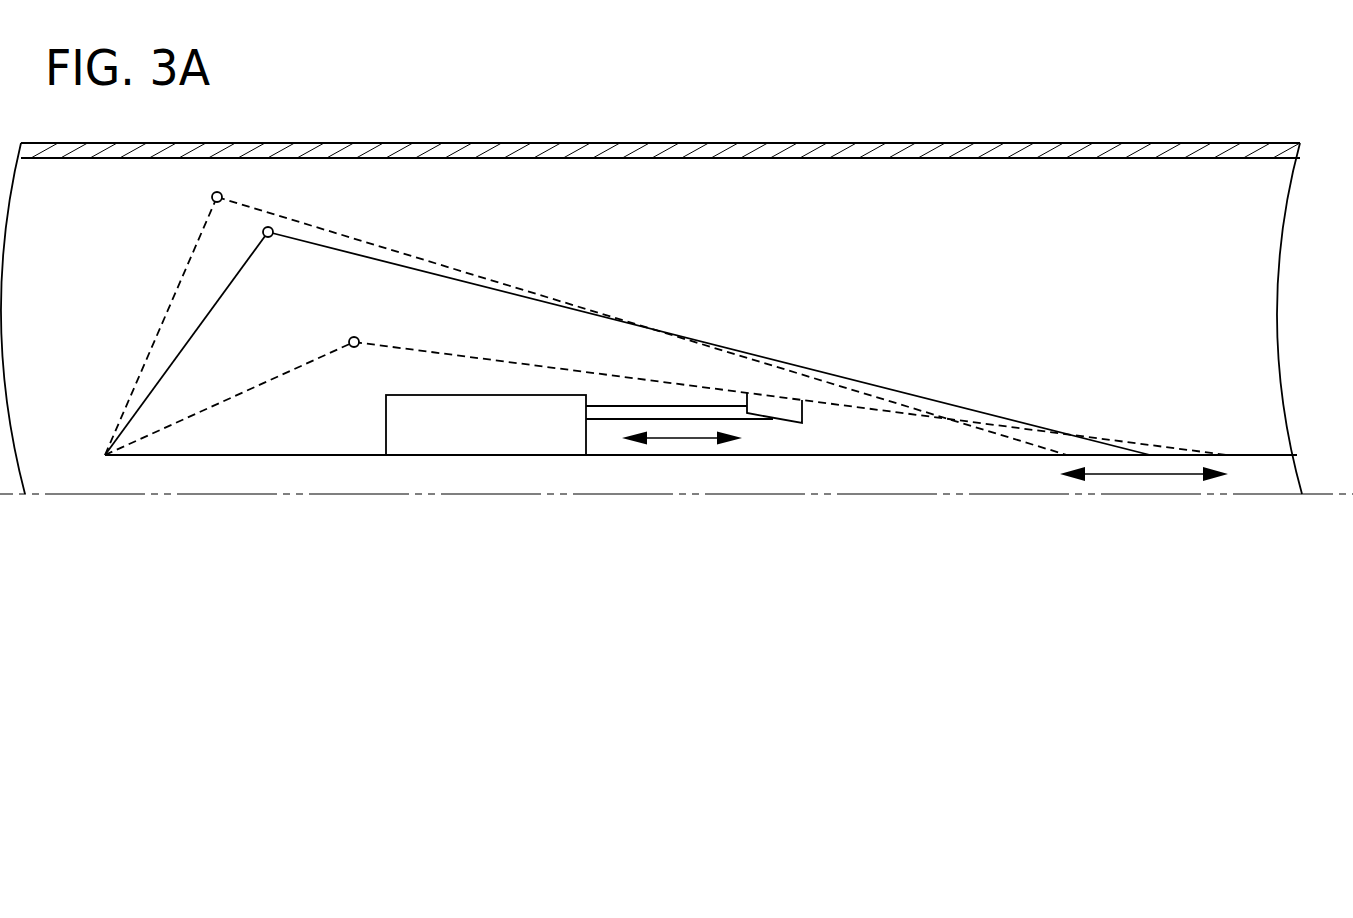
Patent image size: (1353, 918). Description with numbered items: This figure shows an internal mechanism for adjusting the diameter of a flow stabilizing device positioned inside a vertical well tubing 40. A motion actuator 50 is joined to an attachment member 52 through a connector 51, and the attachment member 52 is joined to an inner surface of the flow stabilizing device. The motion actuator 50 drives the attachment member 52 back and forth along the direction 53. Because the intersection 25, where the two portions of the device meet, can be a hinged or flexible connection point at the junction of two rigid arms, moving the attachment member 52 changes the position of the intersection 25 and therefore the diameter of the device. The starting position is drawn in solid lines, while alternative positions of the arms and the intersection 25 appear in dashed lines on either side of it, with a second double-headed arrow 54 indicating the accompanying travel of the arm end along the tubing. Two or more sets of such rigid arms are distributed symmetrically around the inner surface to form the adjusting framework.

The intersection 25 is at (272, 226).
The well tubing 40 is at (626, 147).
The motion actuator 50 is at (450, 431).
The connector 51 is at (607, 413).
The attachment member 52 is at (785, 412).
The direction 53 is at (677, 438).
The arm end movement direction 54 is at (1133, 477).